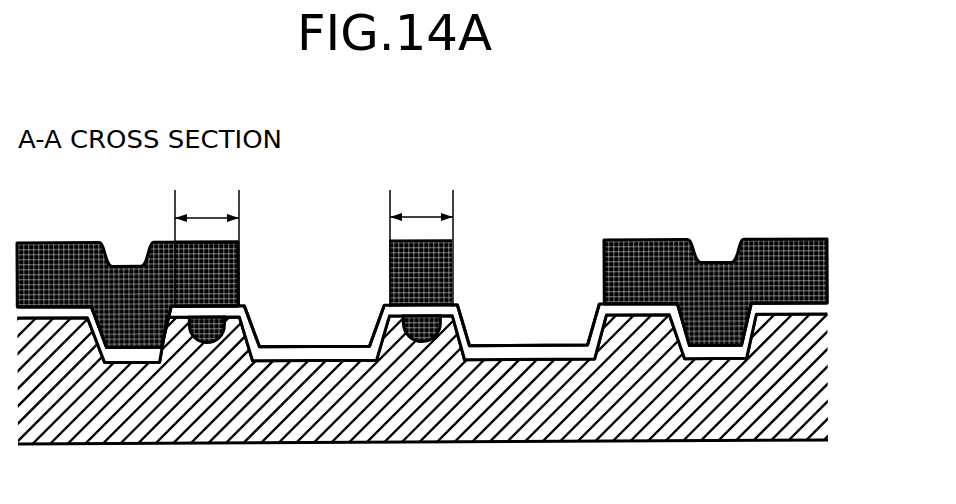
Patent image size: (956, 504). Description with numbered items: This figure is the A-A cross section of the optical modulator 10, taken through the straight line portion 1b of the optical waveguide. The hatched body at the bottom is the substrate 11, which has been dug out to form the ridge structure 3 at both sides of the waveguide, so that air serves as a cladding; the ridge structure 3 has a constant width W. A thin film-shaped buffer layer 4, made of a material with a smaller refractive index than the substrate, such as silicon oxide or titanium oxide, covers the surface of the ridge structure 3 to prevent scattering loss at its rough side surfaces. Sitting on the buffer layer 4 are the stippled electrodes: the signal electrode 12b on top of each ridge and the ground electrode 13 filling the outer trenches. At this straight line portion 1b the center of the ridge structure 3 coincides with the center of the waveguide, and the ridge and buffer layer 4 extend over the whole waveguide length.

The optical modulator 10 is at (589, 167).
The substrate 11 is at (815, 373).
The signal electrode 12b is at (443, 257).
The ground electrode 13 is at (57, 257).
The straight line portion 1b is at (208, 316).
The ridge structure 3 is at (355, 308).
The buffer layer 4 is at (278, 347).